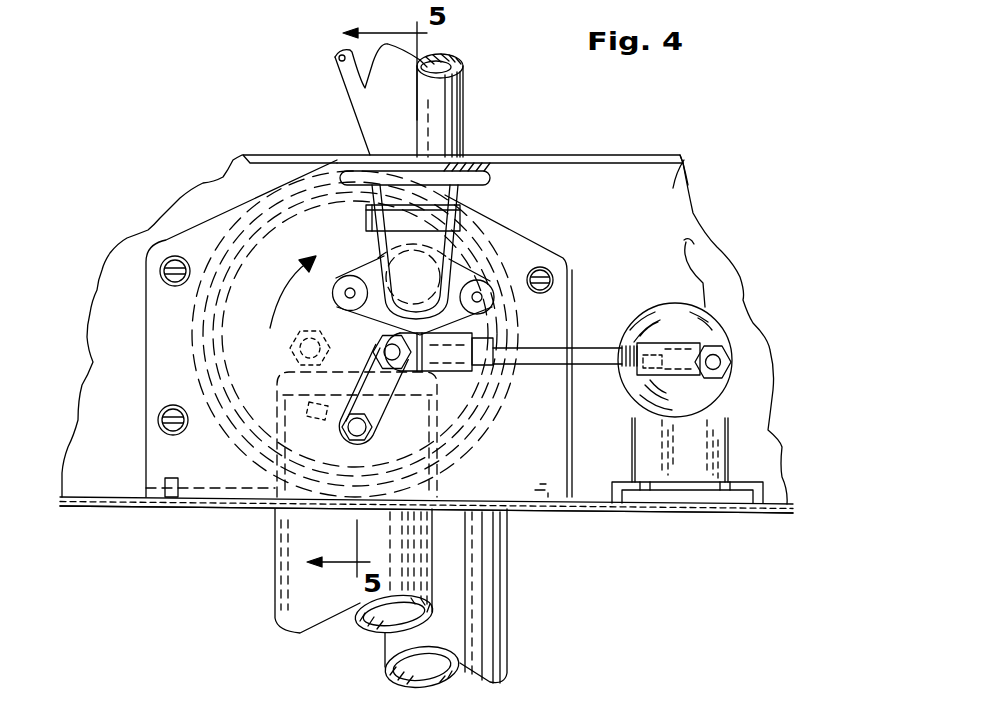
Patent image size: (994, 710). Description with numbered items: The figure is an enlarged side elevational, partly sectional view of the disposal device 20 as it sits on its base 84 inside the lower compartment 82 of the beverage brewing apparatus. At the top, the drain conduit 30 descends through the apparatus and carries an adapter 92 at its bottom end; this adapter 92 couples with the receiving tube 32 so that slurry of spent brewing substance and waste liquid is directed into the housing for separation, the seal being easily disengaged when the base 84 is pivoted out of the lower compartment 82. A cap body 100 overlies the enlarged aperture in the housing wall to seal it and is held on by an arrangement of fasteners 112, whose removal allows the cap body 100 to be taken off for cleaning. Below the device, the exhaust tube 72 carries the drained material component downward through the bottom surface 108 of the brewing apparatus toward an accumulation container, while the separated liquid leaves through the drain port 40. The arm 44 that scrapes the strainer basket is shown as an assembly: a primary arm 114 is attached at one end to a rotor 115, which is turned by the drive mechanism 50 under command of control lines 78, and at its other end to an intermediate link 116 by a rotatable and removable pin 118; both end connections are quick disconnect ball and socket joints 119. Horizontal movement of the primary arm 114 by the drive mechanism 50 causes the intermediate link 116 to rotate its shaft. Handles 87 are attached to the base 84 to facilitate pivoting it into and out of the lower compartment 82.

The disposal device 20 is at (614, 200).
The drain conduit 30 is at (462, 100).
The receiving tube 32 is at (458, 242).
The drain port 40 is at (500, 607).
The arm 44 is at (493, 290).
The drive mechanism 50 is at (660, 292).
The exhaust tube 72 is at (283, 588).
The control lines 78 is at (730, 259).
The lower compartment 82 is at (684, 162).
The base 84 is at (790, 504).
The handles 87 is at (765, 500).
The adapter 92 is at (497, 165).
The cap body 100 is at (158, 330).
The bottom surface 108 is at (760, 515).
The fasteners 112 is at (172, 256).
The primary arm 114 is at (578, 348).
The rotor 115 is at (722, 315).
The intermediate link 116 is at (413, 368).
The pin 118 is at (415, 372).
The ball and socket joints 119 is at (733, 360).